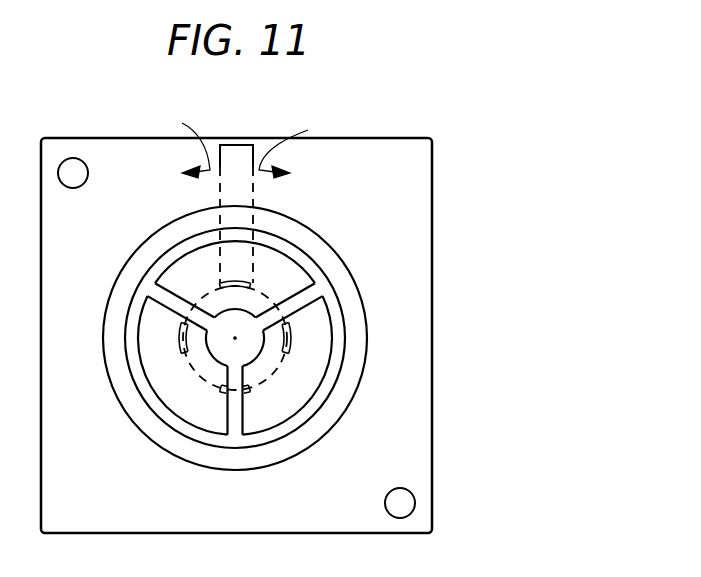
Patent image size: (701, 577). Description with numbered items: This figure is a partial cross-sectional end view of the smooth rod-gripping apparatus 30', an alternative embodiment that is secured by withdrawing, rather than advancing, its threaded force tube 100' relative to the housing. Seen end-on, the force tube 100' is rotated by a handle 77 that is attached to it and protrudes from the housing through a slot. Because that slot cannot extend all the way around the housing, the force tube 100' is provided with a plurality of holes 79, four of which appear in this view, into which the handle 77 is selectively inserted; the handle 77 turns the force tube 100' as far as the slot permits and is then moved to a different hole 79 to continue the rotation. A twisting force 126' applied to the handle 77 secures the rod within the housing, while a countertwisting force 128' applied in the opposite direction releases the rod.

The smooth rod-gripping apparatus 30' is at (318, 321).
The force tube 100' is at (342, 338).
The handle 77 is at (236, 152).
The holes 79 is at (232, 281).
The countertwisting force 128' is at (173, 137).
The twisting force 126' is at (305, 138).